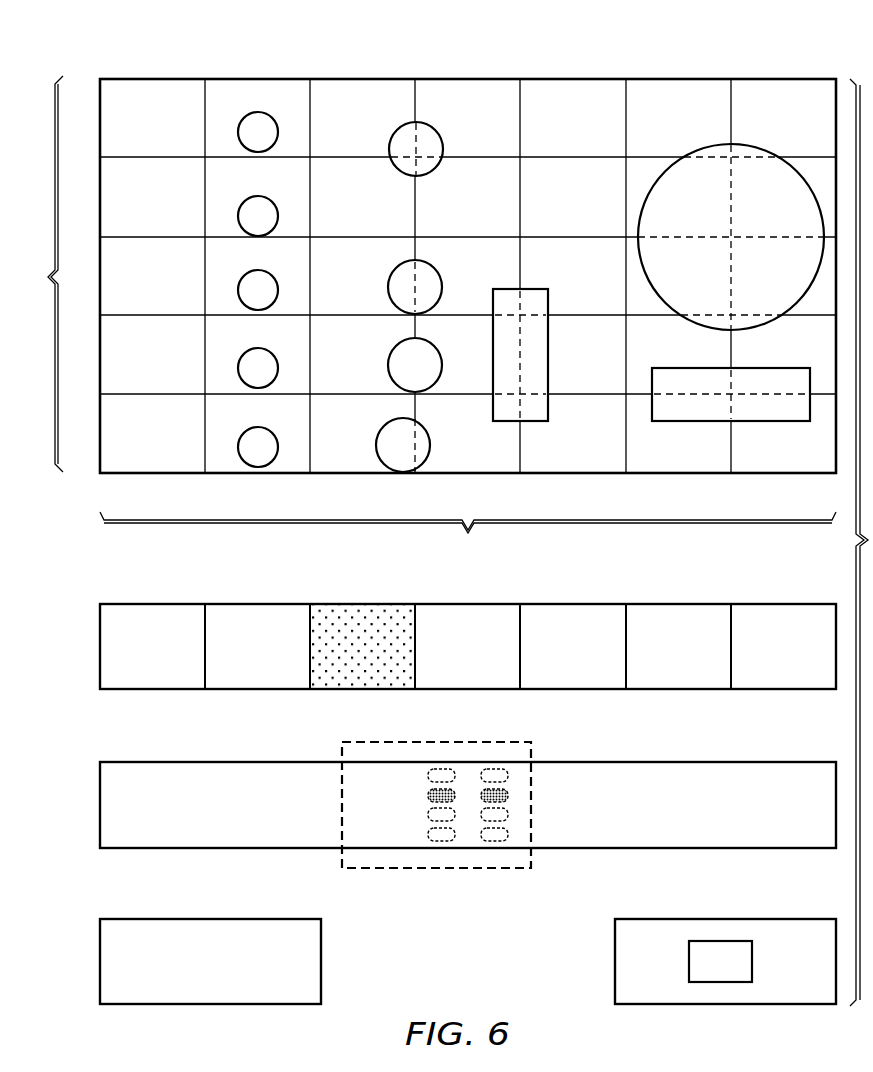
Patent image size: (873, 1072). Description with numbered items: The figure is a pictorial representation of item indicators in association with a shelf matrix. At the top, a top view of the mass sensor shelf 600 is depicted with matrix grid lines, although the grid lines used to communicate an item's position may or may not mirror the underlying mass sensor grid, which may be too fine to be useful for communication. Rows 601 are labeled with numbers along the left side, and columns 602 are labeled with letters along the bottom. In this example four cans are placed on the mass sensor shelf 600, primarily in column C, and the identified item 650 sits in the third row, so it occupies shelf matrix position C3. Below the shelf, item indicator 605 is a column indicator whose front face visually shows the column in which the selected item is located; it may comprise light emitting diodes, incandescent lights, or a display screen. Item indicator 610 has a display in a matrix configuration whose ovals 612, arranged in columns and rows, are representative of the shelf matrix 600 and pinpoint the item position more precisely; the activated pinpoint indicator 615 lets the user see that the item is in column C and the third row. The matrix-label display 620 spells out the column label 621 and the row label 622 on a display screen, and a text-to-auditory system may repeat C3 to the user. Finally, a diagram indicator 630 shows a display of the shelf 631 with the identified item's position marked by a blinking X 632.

The mass sensor shelf 600 is at (579, 77).
The rows 601 is at (49, 281).
The columns 602 is at (468, 525).
The item indicator 605 is at (99, 648).
The item indicator 610 is at (99, 805).
The ovals 612 is at (538, 801).
The pinpoint indicator 615 is at (428, 796).
The matrix-label display 620 is at (99, 962).
The column label 621 is at (184, 962).
The row label 622 is at (236, 962).
The control box 630 is at (614, 962).
The display of shelf 631 is at (752, 962).
The blinking X 632 is at (709, 962).
The identified item 650 is at (390, 277).